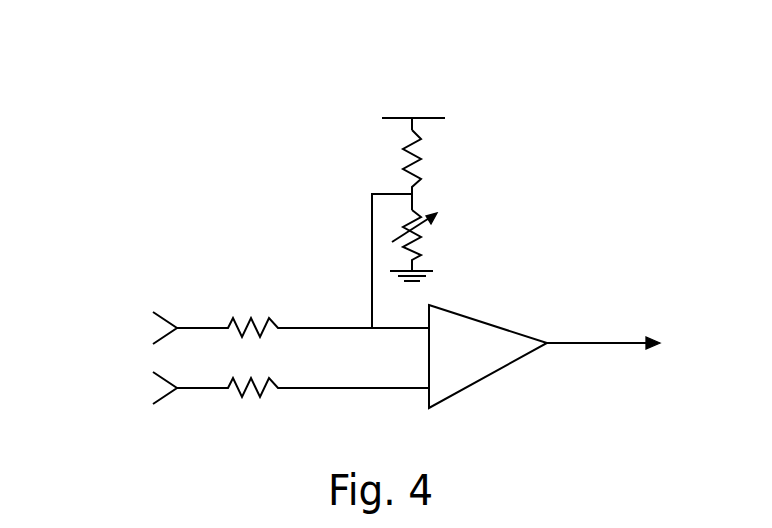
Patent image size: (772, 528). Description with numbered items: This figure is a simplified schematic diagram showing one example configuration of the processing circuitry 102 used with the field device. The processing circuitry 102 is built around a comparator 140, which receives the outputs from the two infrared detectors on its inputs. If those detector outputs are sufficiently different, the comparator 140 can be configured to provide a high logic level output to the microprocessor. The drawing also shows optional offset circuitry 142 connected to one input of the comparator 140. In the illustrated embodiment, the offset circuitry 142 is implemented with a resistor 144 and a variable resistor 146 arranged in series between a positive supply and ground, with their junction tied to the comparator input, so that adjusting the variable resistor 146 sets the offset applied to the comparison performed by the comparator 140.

The processing circuitry 102 is at (567, 135).
The comparator 140 is at (488, 356).
The offset circuitry 142 is at (430, 188).
The resistor 144 is at (407, 160).
The variable resistor 146 is at (418, 242).